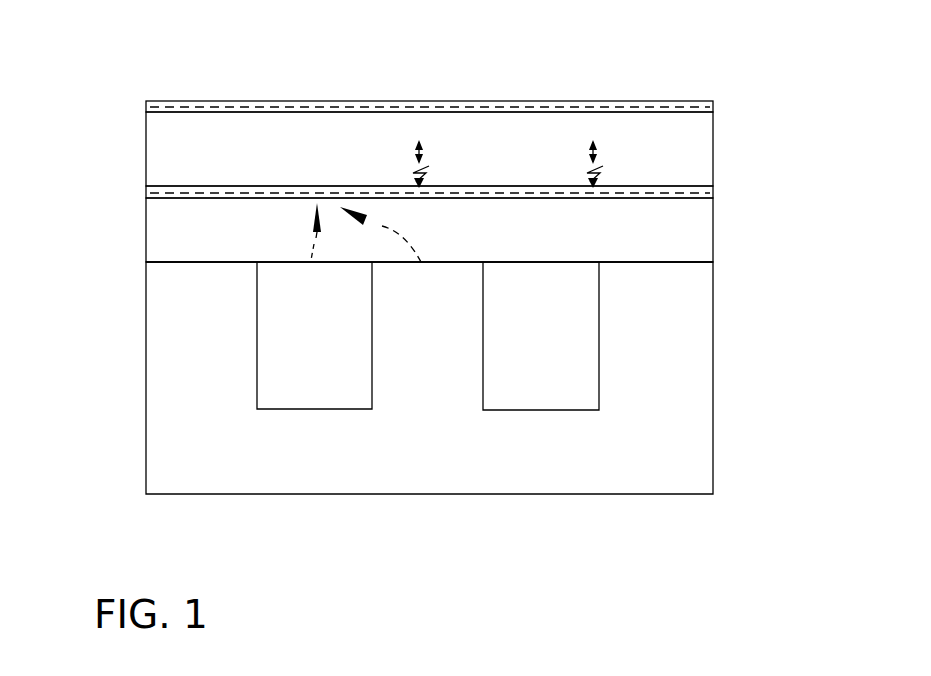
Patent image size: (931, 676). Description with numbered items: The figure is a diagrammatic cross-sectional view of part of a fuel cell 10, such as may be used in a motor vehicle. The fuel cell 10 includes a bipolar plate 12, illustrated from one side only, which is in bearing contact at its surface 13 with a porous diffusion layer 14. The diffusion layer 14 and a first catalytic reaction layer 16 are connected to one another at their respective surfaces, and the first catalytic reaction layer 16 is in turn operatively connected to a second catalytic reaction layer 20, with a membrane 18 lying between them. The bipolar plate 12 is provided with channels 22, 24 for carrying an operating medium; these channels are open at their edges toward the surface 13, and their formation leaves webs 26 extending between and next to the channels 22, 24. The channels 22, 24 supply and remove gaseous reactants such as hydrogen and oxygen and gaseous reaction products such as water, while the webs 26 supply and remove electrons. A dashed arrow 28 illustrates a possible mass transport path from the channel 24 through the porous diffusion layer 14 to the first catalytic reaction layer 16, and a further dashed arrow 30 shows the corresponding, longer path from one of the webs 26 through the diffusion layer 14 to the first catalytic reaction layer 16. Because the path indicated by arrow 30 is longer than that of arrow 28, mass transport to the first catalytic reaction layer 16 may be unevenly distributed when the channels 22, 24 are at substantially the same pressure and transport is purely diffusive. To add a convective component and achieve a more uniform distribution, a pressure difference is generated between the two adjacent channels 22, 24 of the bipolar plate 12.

The fuel cell 10 is at (102, 91).
The bipolar plate 12 is at (735, 396).
The surface 13 is at (202, 260).
The porous diffusion layer 14 is at (690, 230).
The first catalytic reaction layer 16 is at (690, 192).
The membrane 18 is at (690, 143).
The second catalytic reaction layer 20 is at (690, 109).
The channel 22 is at (563, 296).
The channel 24 is at (280, 369).
The webs 26 is at (172, 327).
The dashed arrow 28 is at (314, 240).
The dashed arrow 30 is at (380, 223).